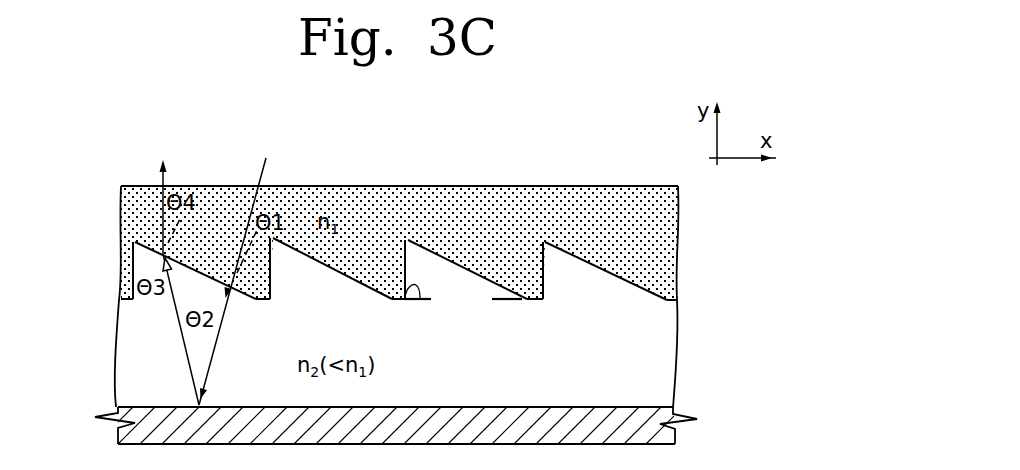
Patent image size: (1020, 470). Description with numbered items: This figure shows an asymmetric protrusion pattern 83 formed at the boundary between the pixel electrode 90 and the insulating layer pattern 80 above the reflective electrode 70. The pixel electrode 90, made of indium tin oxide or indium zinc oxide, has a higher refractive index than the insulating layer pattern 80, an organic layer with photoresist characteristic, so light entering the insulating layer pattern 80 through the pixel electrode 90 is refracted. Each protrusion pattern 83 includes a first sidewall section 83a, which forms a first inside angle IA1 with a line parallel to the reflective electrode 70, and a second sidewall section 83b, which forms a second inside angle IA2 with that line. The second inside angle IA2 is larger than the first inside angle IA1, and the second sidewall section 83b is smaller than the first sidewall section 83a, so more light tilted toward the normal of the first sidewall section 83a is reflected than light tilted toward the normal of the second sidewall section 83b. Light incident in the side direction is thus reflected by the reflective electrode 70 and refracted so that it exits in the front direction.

The protrusion pattern 83 is at (399, 188).
The first sidewall section 83a is at (457, 263).
The second sidewall section 83b is at (404, 288).
The pixel electrode 90 is at (670, 212).
The insulating layer pattern 80 is at (670, 348).
The reflective electrode 70 is at (677, 435).
The first inside angle IA1 is at (501, 294).
The second inside angle IA2 is at (413, 299).